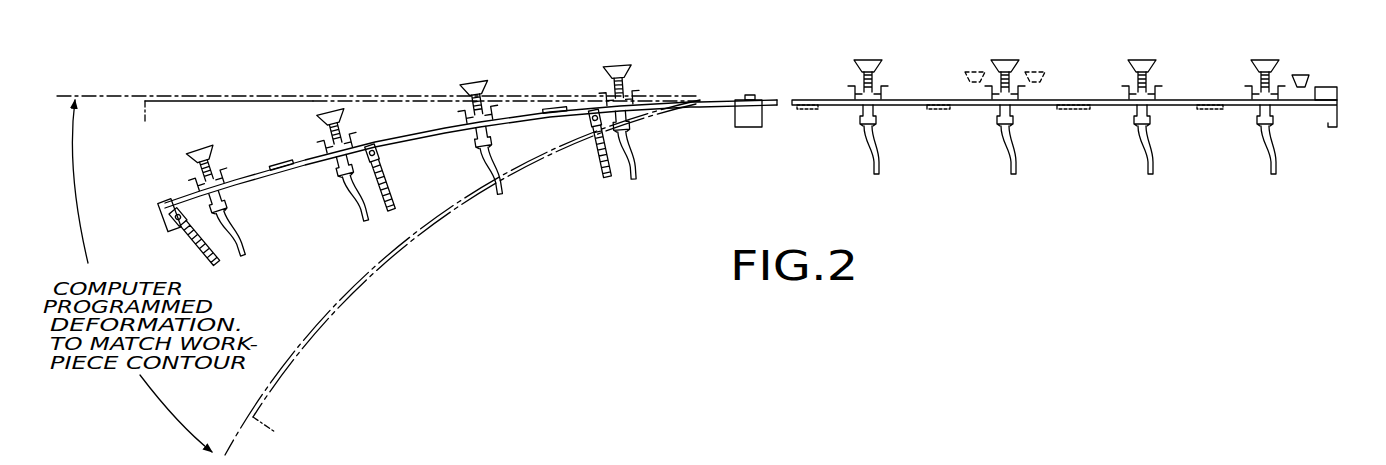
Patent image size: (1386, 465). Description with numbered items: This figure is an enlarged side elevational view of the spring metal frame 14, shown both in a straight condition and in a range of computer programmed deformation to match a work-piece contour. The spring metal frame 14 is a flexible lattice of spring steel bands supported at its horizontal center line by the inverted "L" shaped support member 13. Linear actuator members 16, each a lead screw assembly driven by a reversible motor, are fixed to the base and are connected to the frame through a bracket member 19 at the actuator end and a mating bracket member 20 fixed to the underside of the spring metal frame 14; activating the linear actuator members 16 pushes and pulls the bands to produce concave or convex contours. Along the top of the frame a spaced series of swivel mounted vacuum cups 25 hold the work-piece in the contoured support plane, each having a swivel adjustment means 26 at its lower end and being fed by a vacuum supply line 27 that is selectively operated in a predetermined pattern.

The inverted "L" shaped support member 13 is at (756, 128).
The spring metal frame 14 is at (521, 110).
The linear actuator member 16 is at (596, 158).
The bracket member 19 is at (175, 230).
The bracket member 20 is at (160, 215).
The vacuum cup 25 is at (869, 68).
The swivel adjustment means 26 is at (1323, 87).
The vacuum supply line 27 is at (1002, 142).